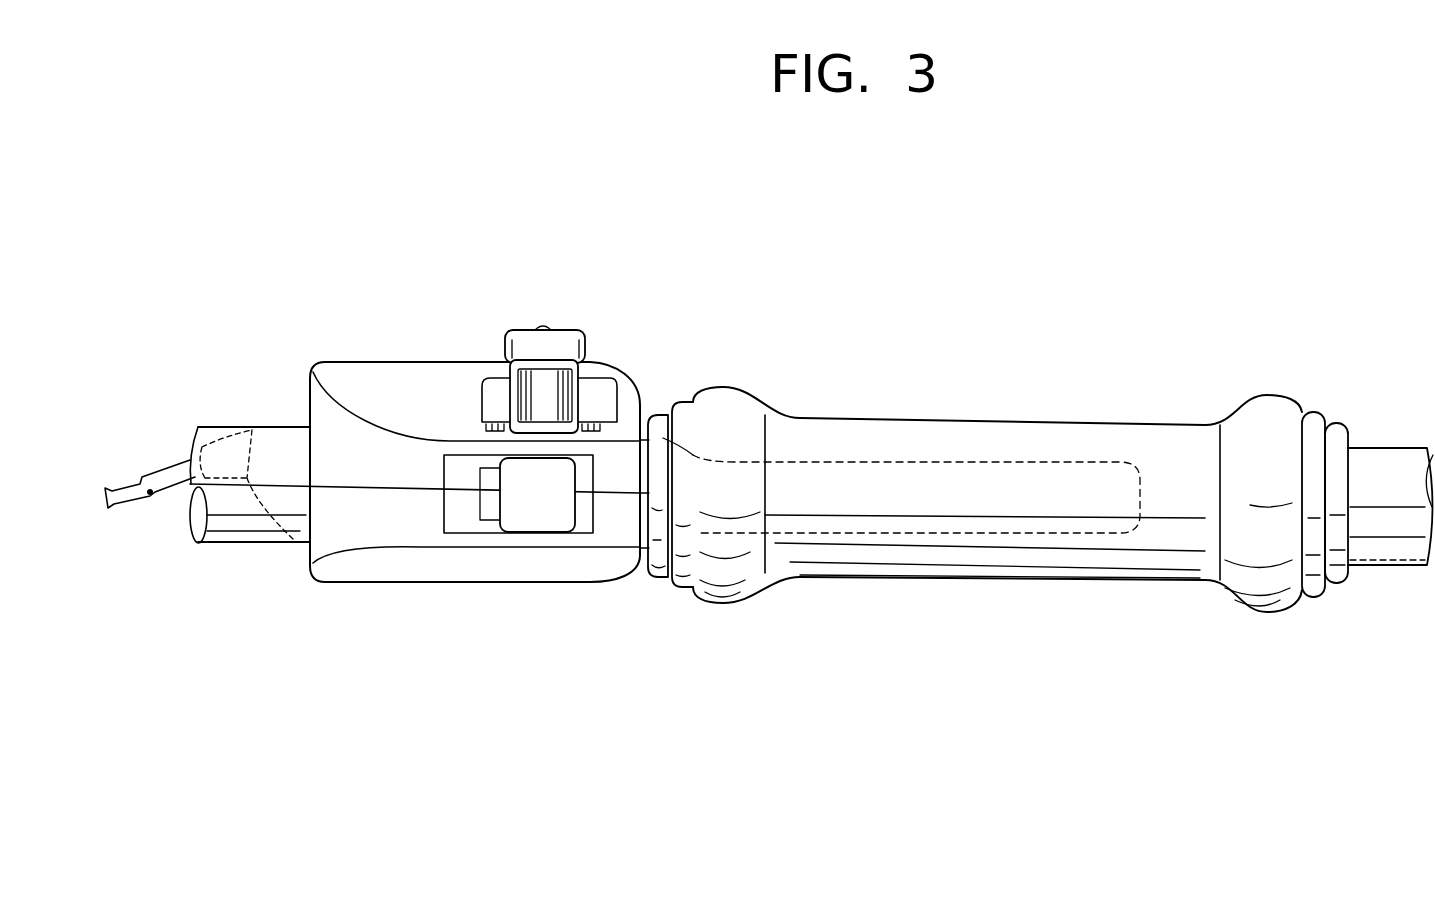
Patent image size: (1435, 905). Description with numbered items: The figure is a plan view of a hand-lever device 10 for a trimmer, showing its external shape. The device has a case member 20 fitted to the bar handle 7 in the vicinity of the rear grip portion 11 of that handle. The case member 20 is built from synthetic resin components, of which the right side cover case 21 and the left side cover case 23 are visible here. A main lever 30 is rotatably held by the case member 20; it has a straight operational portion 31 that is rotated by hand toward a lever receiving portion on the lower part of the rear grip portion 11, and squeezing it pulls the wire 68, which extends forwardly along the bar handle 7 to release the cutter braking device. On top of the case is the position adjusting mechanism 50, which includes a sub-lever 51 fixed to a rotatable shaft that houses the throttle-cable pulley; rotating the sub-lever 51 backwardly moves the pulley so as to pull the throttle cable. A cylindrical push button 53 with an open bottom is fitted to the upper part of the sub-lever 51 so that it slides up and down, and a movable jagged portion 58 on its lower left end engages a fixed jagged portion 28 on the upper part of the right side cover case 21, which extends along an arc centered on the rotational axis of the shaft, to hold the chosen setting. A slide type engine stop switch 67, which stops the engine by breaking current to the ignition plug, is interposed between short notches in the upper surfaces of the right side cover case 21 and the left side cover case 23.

The handle 7 is at (262, 455).
The hand-lever device 10 is at (437, 312).
The rear grip portion 11 is at (918, 432).
The case member 20 is at (355, 352).
The right side cover case 21 is at (400, 378).
The left side cover case 23 is at (390, 560).
The fixed jagged portion 28 is at (594, 420).
The main lever 30 is at (832, 534).
The straight operational portion 31 is at (957, 537).
The position adjusting mechanism 50 is at (518, 327).
The sub-lever 51 is at (510, 347).
The push button 53 is at (548, 380).
The movable jagged portion 58 is at (553, 437).
The engine stop switch 67 is at (543, 519).
The wire 68 is at (128, 497).